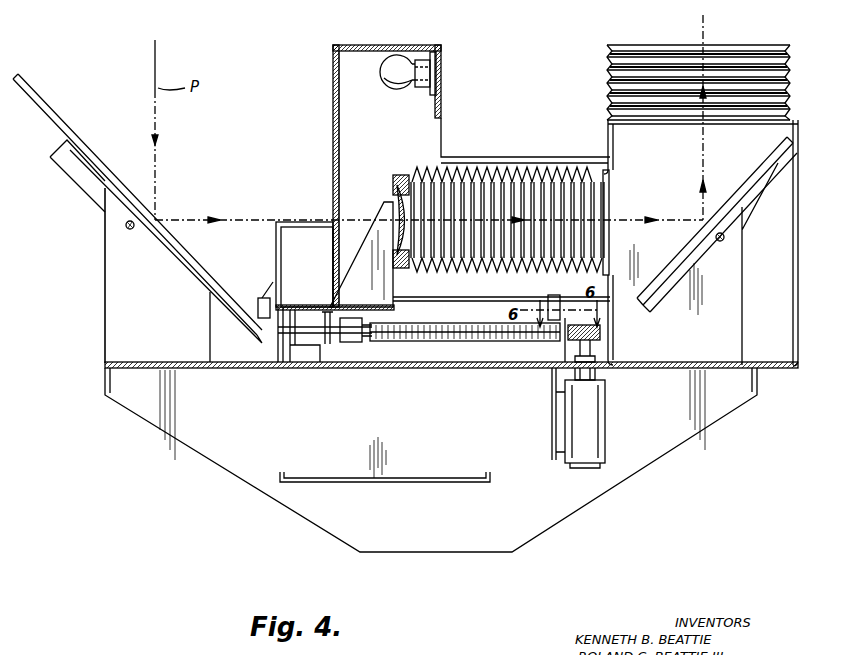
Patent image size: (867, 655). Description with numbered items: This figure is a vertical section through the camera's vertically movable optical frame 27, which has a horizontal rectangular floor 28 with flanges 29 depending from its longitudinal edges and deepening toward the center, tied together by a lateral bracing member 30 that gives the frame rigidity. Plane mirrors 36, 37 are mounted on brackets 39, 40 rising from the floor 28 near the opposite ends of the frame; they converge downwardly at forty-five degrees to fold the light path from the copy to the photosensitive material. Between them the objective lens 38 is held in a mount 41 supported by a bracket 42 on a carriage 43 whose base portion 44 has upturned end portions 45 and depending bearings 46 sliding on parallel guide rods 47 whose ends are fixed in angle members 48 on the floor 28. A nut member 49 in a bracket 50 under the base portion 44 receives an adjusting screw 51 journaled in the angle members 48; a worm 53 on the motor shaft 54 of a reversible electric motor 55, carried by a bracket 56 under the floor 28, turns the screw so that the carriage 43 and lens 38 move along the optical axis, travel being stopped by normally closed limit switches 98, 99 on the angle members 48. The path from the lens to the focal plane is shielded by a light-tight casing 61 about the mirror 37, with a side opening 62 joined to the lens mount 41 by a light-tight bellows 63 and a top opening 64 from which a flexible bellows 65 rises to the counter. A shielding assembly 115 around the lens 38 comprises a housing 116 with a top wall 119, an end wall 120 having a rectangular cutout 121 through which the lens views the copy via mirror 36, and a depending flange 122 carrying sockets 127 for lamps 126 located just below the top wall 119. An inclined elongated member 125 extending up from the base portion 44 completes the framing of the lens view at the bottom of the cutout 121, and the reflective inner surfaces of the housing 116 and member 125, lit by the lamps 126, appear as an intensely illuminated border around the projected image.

The frame 27 is at (152, 425).
The floor 28 is at (282, 368).
The flanges 29 is at (283, 500).
The lateral bracing member 30 is at (392, 485).
The plane mirror 36 is at (52, 113).
The plane mirror 37 is at (758, 175).
The objective lens 38 is at (407, 195).
The bracket 39 is at (108, 287).
The bracket 40 is at (736, 306).
The mount 41 is at (398, 178).
The bracket 42 is at (375, 213).
The carriage 43 is at (276, 258).
The base portion 44 is at (302, 304).
The upturned end portions 45 is at (290, 222).
The bearings 46 is at (297, 345).
The guide rods 47 is at (330, 346).
The angle members 48 is at (262, 370).
The nut member 49 is at (355, 335).
The bracket 50 is at (395, 316).
The adjusting screw 51 is at (470, 342).
The worm 53 is at (602, 332).
The motor shaft 54 is at (597, 350).
The reversible electric motor 55 is at (605, 440).
The bracket 56 is at (552, 428).
The light-tight casing 61 is at (608, 132).
The opening 62 is at (610, 218).
The light-tight bellows 63 is at (506, 175).
The opening 64 is at (692, 124).
The flexible bellows 65 is at (607, 70).
The limit switch 98 is at (555, 296).
The limit switch 99 is at (260, 304).
The shielding assembly 115 is at (445, 118).
The housing 116 is at (440, 46).
The top wall 119 is at (392, 45).
The end wall 120 is at (333, 117).
The rectangular cutout 121 is at (333, 172).
The flange 122 is at (440, 75).
The inclined elongated member 125 is at (270, 282).
The lamps 126 is at (385, 60).
The sockets 127 is at (426, 70).